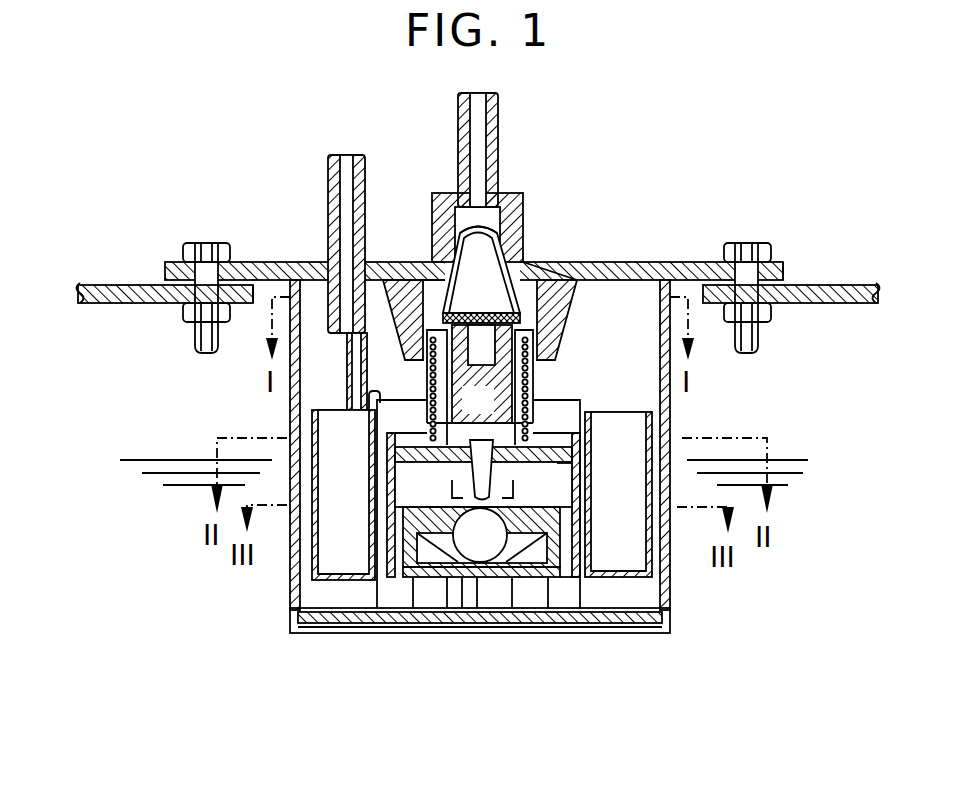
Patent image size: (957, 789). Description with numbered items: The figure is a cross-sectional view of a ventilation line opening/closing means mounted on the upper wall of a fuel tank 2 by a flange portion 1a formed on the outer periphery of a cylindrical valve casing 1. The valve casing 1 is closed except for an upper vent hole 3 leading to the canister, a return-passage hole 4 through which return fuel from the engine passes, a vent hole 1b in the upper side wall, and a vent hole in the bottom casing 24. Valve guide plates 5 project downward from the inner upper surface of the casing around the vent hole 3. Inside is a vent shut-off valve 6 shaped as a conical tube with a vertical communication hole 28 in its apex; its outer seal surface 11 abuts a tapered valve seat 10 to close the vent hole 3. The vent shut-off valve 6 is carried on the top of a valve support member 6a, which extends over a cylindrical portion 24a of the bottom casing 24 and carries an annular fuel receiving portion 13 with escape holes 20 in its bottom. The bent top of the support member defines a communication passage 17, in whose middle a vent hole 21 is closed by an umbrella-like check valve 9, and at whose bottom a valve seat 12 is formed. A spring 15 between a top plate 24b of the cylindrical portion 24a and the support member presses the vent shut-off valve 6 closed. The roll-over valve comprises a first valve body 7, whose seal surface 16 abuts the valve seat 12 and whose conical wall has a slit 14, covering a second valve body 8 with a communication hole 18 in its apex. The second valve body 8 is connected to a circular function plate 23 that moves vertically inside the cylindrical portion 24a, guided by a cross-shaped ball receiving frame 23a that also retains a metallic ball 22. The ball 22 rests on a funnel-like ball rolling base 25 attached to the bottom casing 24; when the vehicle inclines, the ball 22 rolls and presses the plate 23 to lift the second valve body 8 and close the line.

The cylindrical valve casing 1 is at (645, 262).
The flange portion 1a is at (783, 266).
The vent hole 1b is at (290, 287).
The fuel tank 2 is at (818, 284).
The upper vent hole 3 is at (497, 150).
The return-passage hole 4 is at (343, 233).
The valve guide plates 5 is at (570, 279).
The vent shut-off valve 6 is at (563, 305).
The valve support member 6a is at (372, 395).
The first valve body 7 is at (467, 470).
The second valve body 8 is at (463, 510).
The check valve 9 is at (513, 285).
The tapered valve seat 10 is at (447, 213).
The seal surface 11 is at (528, 242).
The valve seat 12 is at (440, 413).
The fuel receiving portion 13 is at (328, 508).
The slit 14 is at (500, 498).
The spring 15 is at (535, 390).
The seal surface 16 is at (463, 443).
The communication passage 17 is at (485, 242).
The communication hole 18 is at (560, 443).
The escape holes 20 is at (343, 575).
The vent hole 21 is at (445, 278).
The metallic ball 22 is at (477, 560).
The circular function plate 23 is at (568, 523).
The ball receiving frame 23a is at (525, 577).
The bottom casing 24 is at (572, 612).
The cylindrical portion 24a is at (577, 583).
The top plate 24b is at (557, 463).
The ball rolling base 25 is at (443, 540).
The vertical communication hole 28 is at (478, 238).